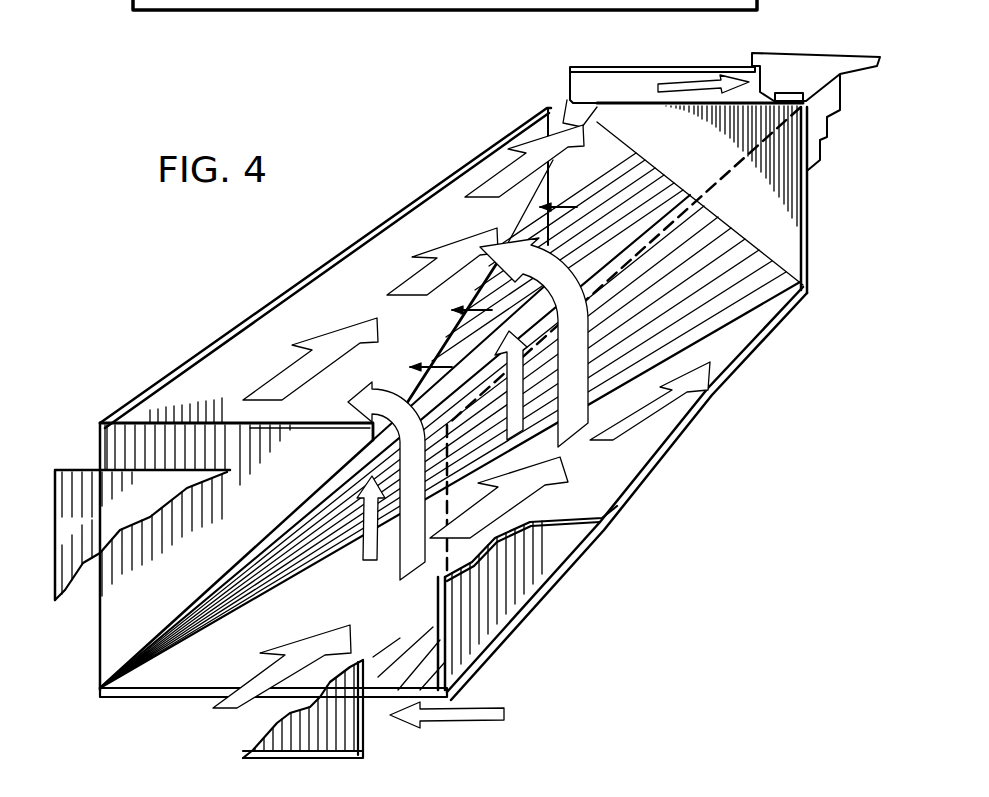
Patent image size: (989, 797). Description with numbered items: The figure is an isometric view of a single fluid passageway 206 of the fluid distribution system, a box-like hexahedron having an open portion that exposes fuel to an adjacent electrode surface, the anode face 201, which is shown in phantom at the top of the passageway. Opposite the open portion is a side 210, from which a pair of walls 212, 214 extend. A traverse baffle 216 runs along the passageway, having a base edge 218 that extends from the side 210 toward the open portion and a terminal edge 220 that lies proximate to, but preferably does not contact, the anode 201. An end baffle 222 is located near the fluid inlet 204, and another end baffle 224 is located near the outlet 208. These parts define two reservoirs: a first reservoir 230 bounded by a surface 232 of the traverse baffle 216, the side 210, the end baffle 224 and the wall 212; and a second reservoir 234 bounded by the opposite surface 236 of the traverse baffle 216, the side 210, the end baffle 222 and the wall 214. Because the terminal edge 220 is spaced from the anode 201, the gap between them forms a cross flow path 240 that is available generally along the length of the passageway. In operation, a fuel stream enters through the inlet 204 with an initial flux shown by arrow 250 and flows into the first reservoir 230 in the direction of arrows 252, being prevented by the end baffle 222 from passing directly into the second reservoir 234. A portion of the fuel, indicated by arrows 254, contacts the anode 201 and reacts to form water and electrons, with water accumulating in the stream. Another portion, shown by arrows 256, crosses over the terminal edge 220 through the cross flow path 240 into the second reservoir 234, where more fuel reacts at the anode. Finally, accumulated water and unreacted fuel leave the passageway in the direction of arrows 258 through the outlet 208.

The anode face 201 is at (810, 60).
The fluid inlet 204 is at (379, 709).
The fluid passageway 206 is at (295, 260).
The outlet 208 is at (627, 85).
The side 210 is at (180, 672).
The wall 212 is at (490, 589).
The wall 214 is at (168, 372).
The traverse baffle 216 is at (440, 356).
The base edge 218 is at (230, 613).
The terminal edge 220 is at (403, 386).
The end baffle 222 is at (140, 417).
The end baffle 224 is at (662, 128).
The first reservoir 230 is at (625, 480).
The surface of traverse baffle 232 is at (700, 318).
The second reservoir 234 is at (372, 303).
The surface of traverse baffle 236 is at (567, 100).
The cross flow path 240 is at (452, 310).
The arrow 250 is at (508, 712).
The arrows 252 is at (712, 377).
The arrows 254 is at (503, 428).
The arrows 256 is at (600, 345).
The arrows 258 is at (440, 248).